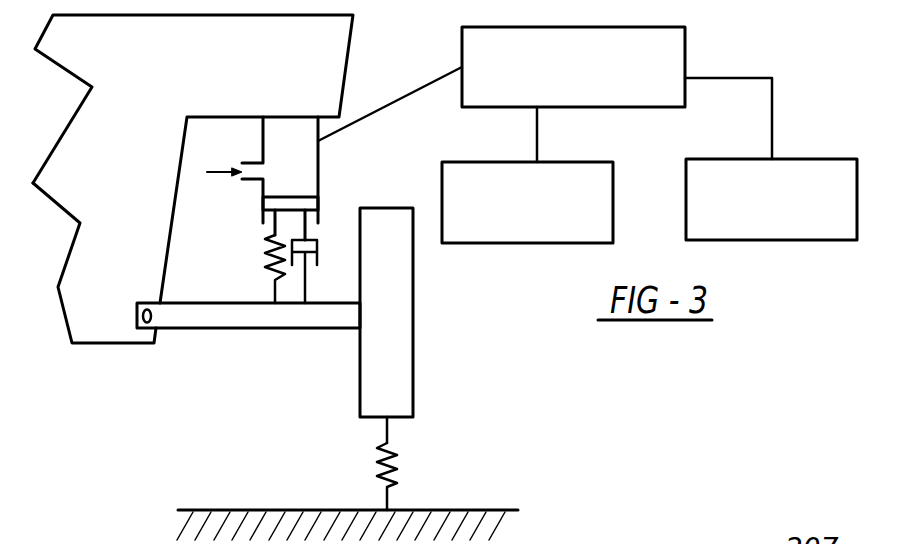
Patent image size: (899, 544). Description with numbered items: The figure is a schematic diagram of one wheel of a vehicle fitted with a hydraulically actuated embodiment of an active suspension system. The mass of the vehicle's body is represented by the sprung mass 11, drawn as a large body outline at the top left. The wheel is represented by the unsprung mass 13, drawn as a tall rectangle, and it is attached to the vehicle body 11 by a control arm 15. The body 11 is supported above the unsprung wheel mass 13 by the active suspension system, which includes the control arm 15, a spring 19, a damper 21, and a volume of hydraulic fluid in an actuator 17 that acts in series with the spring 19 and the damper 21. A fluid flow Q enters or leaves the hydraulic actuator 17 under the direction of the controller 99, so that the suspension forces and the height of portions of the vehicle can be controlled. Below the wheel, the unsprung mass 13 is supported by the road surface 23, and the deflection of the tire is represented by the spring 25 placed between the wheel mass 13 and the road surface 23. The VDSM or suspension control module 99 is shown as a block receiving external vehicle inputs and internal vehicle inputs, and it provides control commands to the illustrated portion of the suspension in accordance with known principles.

The sprung mass 11 is at (348, 75).
The unsprung mass 13 is at (413, 287).
The control arm 15 is at (212, 328).
The hydraulic actuator 17 is at (318, 170).
The spring 19 is at (277, 237).
The damper 21 is at (317, 247).
The road surface 23 is at (275, 510).
The spring 25 is at (397, 453).
The suspension control module 99 is at (685, 35).